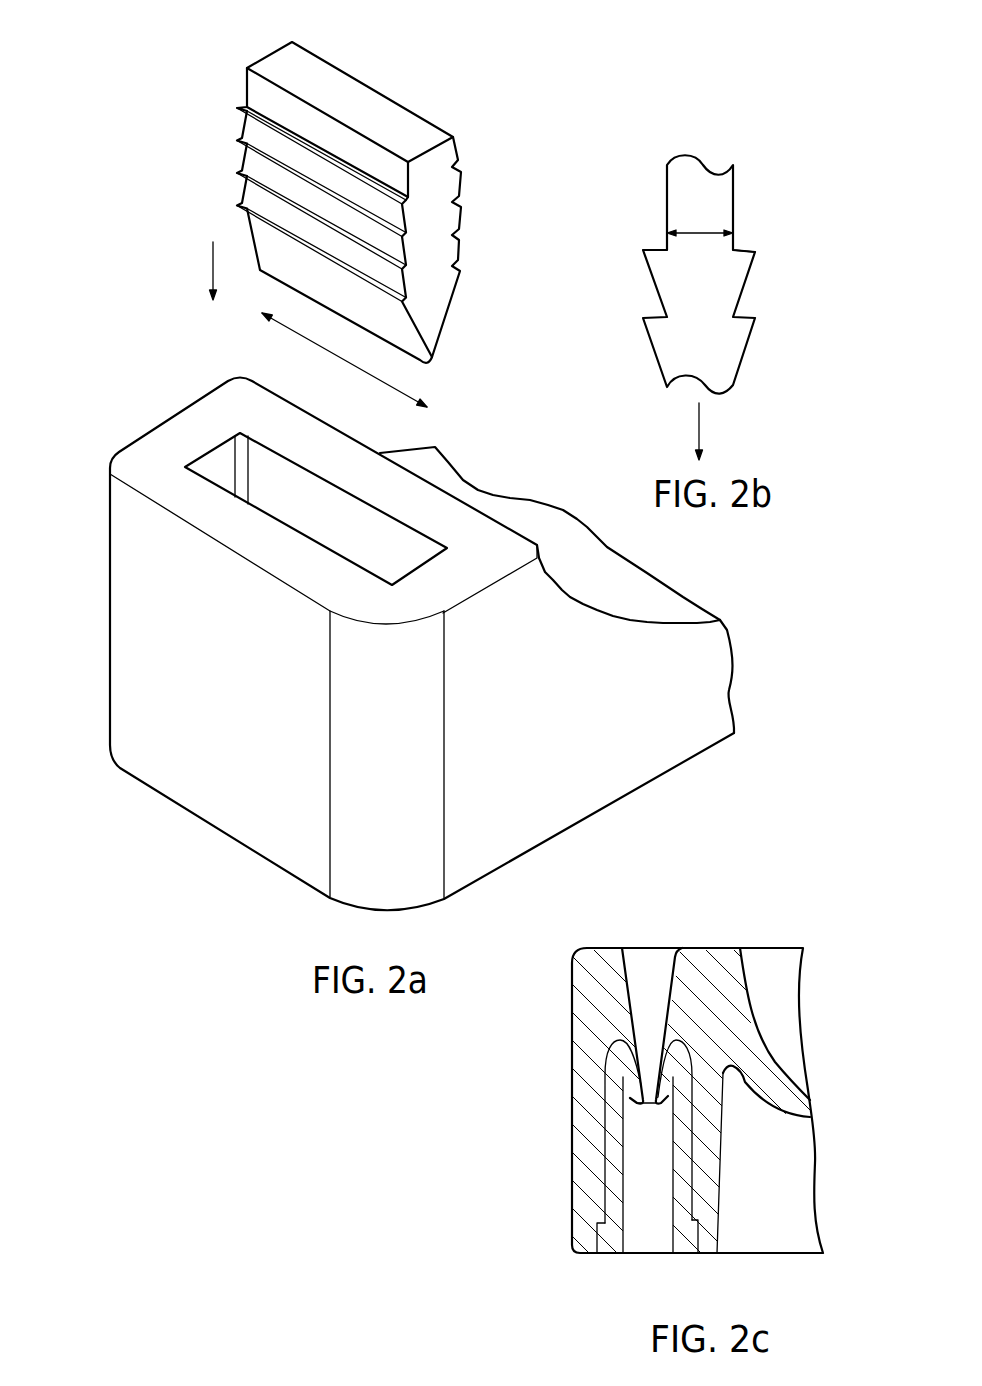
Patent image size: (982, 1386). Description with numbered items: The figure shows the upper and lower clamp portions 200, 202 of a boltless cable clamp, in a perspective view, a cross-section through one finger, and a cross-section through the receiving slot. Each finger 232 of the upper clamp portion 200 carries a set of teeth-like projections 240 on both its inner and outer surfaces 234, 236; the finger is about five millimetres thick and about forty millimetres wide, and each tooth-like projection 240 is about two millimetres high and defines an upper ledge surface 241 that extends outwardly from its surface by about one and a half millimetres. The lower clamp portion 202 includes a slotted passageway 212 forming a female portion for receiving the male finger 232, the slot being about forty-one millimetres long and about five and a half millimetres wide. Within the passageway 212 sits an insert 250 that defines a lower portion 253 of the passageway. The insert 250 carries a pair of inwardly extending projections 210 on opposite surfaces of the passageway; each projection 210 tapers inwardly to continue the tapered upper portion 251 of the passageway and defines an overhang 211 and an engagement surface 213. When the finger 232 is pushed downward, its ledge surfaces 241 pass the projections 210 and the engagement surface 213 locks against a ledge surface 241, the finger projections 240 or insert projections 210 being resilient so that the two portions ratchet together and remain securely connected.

In FIG. 2a, the upper clamp portion 200 is at (452, 65).
In FIG. 2a, the lower clamp portion 202 is at (382, 644).
In FIG. 2c, the inwardly extending projection 210 is at (637, 1102).
In FIG. 2c, the overhang 211 is at (660, 1102).
In FIG. 2a, the slotted passageway 212 is at (185, 467).
In FIG. 2c, the slotted passageway 212 is at (672, 927).
In FIG. 2c, the engagement surface 213 is at (672, 1090).
In FIG. 2a, the finger 232 is at (275, 202).
In FIG. 2b, the finger 232 is at (741, 307).
In FIG. 2b, the inner surface 234 is at (733, 200).
In FIG. 2b, the outer surface 236 is at (667, 193).
In FIG. 2a, the tooth-like projection 240 is at (237, 172).
In FIG. 2b, the tooth-like projection 240 is at (755, 252).
In FIG. 2b, the upper ledge surface 241 is at (643, 250).
In FIG. 2c, the insert 250 is at (687, 1237).
In FIG. 2c, the tapered upper portion 251 is at (660, 985).
In FIG. 2c, the lower portion 253 is at (643, 1205).